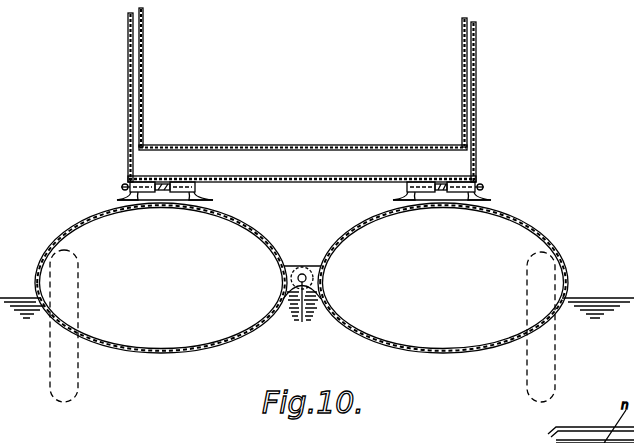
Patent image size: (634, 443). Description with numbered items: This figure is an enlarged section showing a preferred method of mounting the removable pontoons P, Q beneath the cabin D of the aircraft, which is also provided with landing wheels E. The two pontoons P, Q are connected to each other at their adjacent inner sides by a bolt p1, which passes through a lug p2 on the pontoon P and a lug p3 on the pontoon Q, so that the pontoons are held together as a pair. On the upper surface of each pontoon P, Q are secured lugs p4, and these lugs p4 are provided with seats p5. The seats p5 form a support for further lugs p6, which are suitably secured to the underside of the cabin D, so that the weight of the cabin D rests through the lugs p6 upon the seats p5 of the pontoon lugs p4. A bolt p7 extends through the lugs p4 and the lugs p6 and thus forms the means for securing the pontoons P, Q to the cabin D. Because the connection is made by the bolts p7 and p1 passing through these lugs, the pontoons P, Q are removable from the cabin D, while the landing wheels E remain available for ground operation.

The cabin D is at (326, 121).
The lugs p6 is at (142, 183).
The lugs p4 is at (162, 191).
The bolt p7 is at (198, 188).
The seats p5 is at (190, 201).
The pontoon P is at (143, 353).
The pontoon Q is at (428, 353).
The bolt p1 is at (302, 322).
The lug p2 is at (292, 292).
The lug p3 is at (310, 292).
The landing wheels E is at (51, 393).